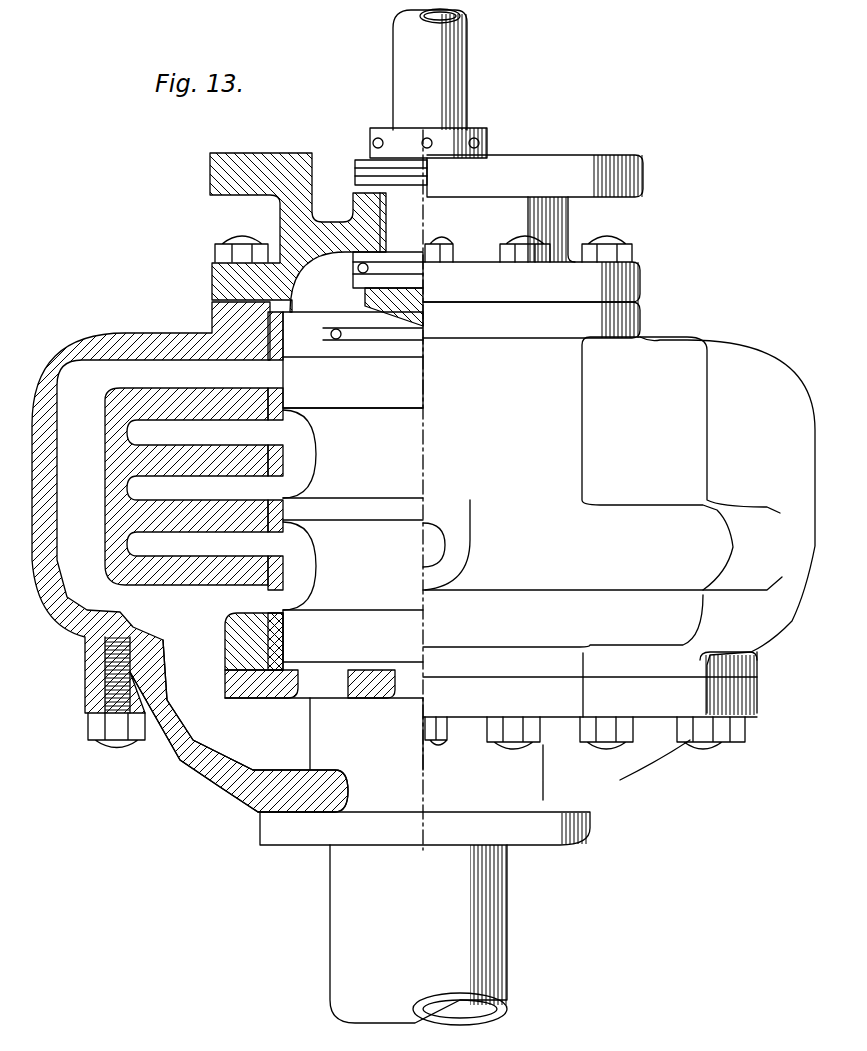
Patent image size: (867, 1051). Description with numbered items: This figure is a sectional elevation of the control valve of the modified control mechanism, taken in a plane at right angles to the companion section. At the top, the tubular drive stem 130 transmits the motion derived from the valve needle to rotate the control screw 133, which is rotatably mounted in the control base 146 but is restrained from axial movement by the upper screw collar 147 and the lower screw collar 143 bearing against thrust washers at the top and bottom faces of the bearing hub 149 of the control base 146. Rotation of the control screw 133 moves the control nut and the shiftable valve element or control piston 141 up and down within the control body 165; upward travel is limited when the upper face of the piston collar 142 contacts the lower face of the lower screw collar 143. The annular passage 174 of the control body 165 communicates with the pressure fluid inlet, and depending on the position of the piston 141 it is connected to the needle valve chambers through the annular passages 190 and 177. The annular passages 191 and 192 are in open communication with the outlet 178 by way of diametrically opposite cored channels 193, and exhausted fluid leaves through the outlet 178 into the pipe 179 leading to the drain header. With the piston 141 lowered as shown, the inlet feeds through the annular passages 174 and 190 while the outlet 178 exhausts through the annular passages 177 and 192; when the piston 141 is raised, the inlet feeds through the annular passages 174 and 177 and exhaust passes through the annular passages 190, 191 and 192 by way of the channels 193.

The stem 130 is at (456, 88).
The upper screw collar 147 is at (370, 146).
The control base 146 is at (280, 216).
The bearing hub 149 is at (386, 212).
The lower screw collar 143 is at (353, 281).
The control screw 133 is at (404, 311).
The piston collar 142 is at (376, 350).
The control piston 141 is at (532, 499).
The cored channels 193 is at (88, 388).
The annular passage 191 is at (194, 376).
The annular passage 190 is at (202, 434).
The annular passage 174 is at (202, 489).
The annular passage 177 is at (202, 545).
The annular passage 192 is at (252, 598).
The control body 165 is at (170, 762).
The outlet 178 is at (262, 756).
The pipe 179 is at (340, 924).